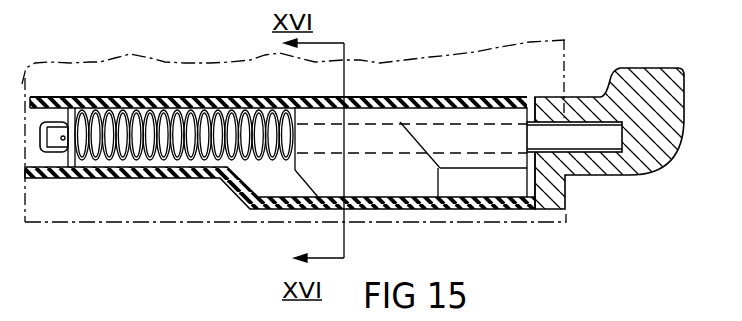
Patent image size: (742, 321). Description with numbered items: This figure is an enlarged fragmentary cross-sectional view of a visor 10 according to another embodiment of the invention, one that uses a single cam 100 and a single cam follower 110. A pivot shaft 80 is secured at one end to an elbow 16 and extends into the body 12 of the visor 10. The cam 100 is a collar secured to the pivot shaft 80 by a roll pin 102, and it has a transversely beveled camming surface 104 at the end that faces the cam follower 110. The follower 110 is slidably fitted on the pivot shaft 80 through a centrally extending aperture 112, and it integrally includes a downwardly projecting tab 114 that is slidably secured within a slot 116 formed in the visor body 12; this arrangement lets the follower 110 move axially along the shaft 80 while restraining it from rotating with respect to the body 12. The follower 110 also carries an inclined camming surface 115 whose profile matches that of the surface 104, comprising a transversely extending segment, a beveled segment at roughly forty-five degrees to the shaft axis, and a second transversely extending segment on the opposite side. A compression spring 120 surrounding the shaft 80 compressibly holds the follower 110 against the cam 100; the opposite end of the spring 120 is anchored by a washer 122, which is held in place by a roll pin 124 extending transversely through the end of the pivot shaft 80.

The visor 10 is at (565, 43).
The body 12 is at (126, 197).
The elbow 16 is at (686, 83).
The pivot shaft 80 is at (597, 143).
The cam 100 is at (431, 118).
The roll pin 102 is at (481, 143).
The camming surface 104 is at (428, 170).
The cam follower 110 is at (365, 119).
The aperture 112 is at (308, 100).
The tab 114 is at (393, 179).
The camming surface 115 is at (411, 131).
The slot 116 is at (278, 190).
The compression spring 120 is at (178, 112).
The washer 122 is at (72, 110).
The roll pin 124 is at (62, 125).